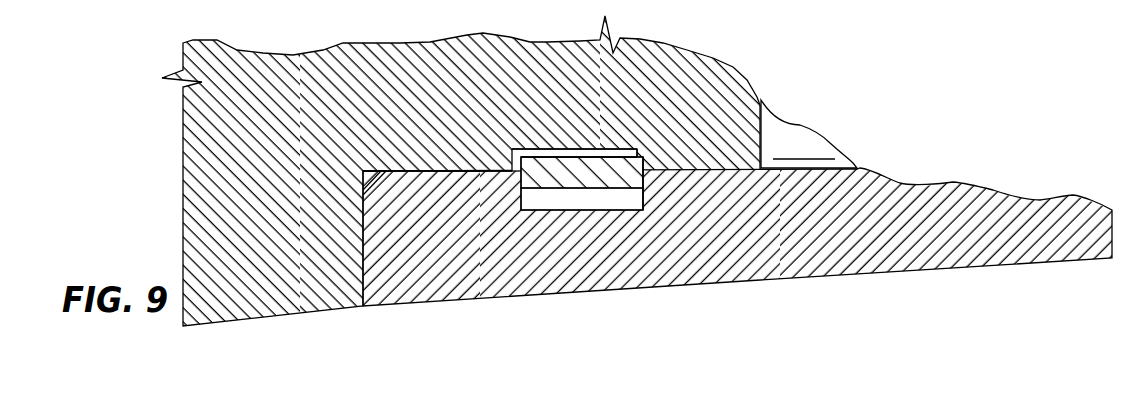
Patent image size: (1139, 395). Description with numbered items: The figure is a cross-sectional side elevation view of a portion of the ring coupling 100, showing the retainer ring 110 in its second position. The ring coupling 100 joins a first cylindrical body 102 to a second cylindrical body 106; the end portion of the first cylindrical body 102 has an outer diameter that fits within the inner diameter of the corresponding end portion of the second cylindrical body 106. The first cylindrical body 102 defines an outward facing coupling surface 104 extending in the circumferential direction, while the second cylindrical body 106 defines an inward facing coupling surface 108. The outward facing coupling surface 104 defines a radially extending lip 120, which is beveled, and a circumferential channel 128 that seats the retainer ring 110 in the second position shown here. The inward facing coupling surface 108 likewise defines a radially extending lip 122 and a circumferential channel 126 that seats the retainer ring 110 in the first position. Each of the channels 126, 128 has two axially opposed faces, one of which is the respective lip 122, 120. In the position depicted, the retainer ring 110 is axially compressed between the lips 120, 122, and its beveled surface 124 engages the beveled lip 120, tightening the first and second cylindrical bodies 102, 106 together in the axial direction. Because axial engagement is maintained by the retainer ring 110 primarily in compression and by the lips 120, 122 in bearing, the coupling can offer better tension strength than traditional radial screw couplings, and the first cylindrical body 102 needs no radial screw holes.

The ring coupling 100 is at (637, 197).
The first cylindrical body 102 is at (343, 312).
The outward facing coupling surface 104 is at (407, 170).
The second cylindrical body 106 is at (450, 304).
The inward facing coupling surface 108 is at (481, 173).
The retainer ring 110 is at (560, 173).
The radially extending lip 120 is at (627, 167).
The radially extending lip 122 is at (518, 188).
The beveled surface 124 is at (644, 170).
The circumferential channel 126 is at (603, 210).
The circumferential channel 128 is at (582, 150).